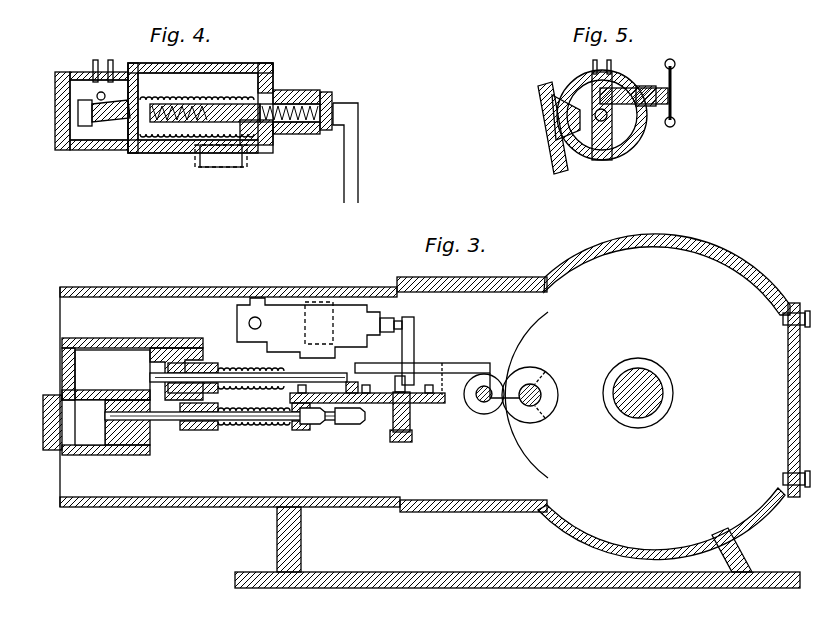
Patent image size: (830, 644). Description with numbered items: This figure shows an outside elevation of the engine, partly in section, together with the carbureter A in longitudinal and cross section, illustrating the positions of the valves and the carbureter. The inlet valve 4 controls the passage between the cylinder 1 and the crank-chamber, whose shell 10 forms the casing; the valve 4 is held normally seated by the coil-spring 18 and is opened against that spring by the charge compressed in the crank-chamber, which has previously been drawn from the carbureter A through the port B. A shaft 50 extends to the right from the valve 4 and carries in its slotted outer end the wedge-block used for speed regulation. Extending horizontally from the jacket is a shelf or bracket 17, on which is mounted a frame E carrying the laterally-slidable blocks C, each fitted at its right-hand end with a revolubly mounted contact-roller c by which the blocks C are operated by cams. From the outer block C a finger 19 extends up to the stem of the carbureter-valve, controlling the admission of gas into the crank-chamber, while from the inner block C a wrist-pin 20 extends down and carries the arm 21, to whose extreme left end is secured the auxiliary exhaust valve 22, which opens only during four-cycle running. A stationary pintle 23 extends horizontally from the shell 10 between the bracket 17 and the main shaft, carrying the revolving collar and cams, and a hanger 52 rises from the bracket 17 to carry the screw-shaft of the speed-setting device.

In FIG. 4, the carbureter A is at (266, 73).
In FIG. 5, the carbureter A is at (606, 152).
In FIG. 3, the carbureter A is at (273, 305).
In FIG. 5, the port B is at (552, 140).
In FIG. 3, the port B is at (319, 323).
In FIG. 3, the laterally-slidable block C is at (443, 364).
In FIG. 3, the frame E is at (490, 372).
In FIG. 3, the contact-roller c is at (481, 414).
In FIG. 3, the cylinder 1 is at (637, 380).
In FIG. 3, the valve 4 is at (150, 374).
In FIG. 3, the shell of the crank-chamber 10 is at (435, 411).
In FIG. 3, the shelf or bracket 17 is at (410, 404).
In FIG. 3, the coil-spring 18 is at (226, 368).
In FIG. 4, the finger 19 is at (358, 152).
In FIG. 3, the finger 19 is at (414, 338).
In FIG. 3, the wrist-pin 20 is at (400, 442).
In FIG. 3, the arm 21 is at (357, 424).
In FIG. 3, the auxiliary valve 22 is at (100, 452).
In FIG. 3, the stationary pintle 23 is at (541, 393).
In FIG. 3, the shaft 50 is at (290, 373).
In FIG. 3, the hanger 52 is at (340, 380).